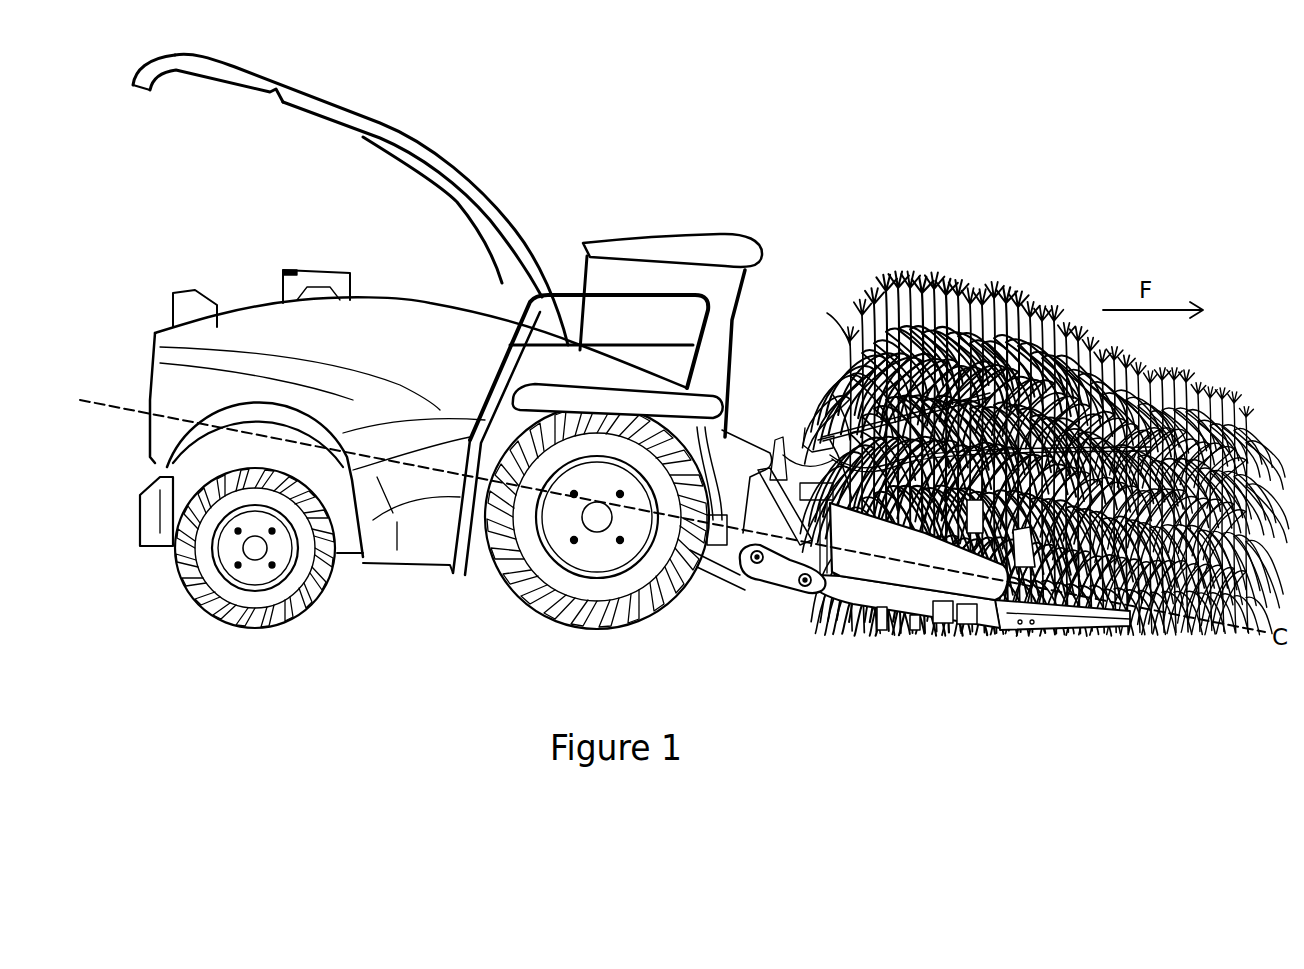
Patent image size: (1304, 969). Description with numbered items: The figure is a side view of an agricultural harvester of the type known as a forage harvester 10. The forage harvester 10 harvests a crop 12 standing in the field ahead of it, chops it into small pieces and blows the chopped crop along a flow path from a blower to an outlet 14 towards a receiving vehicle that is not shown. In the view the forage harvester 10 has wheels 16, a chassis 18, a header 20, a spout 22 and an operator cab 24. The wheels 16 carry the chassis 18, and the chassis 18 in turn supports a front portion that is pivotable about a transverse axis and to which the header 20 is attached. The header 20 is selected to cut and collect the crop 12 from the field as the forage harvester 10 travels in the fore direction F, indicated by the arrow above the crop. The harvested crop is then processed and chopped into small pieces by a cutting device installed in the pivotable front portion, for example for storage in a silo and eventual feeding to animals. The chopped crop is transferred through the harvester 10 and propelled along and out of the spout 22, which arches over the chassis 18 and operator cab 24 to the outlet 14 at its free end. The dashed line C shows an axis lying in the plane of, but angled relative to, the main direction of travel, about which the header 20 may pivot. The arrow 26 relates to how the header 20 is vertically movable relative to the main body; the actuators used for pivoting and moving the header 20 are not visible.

The forage harvester 10 is at (641, 373).
The crop 12 is at (1048, 272).
The outlet 14 is at (141, 124).
The wheels 16 is at (190, 590).
The chassis 18 is at (412, 328).
The header 20 is at (863, 607).
The spout 22 is at (449, 157).
The operator cab 24 is at (681, 242).
The arrow 26 is at (517, 309).